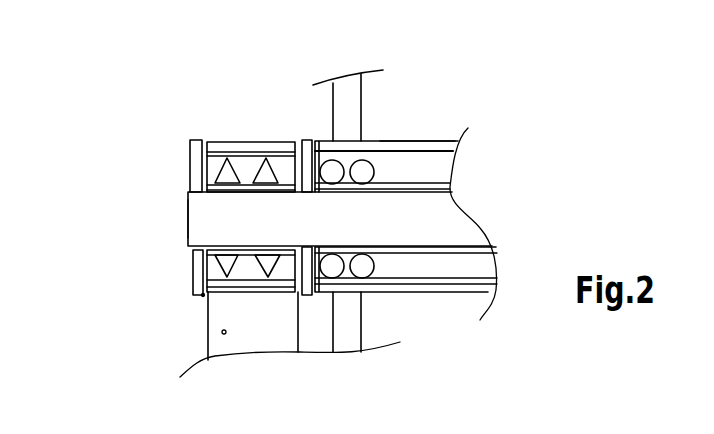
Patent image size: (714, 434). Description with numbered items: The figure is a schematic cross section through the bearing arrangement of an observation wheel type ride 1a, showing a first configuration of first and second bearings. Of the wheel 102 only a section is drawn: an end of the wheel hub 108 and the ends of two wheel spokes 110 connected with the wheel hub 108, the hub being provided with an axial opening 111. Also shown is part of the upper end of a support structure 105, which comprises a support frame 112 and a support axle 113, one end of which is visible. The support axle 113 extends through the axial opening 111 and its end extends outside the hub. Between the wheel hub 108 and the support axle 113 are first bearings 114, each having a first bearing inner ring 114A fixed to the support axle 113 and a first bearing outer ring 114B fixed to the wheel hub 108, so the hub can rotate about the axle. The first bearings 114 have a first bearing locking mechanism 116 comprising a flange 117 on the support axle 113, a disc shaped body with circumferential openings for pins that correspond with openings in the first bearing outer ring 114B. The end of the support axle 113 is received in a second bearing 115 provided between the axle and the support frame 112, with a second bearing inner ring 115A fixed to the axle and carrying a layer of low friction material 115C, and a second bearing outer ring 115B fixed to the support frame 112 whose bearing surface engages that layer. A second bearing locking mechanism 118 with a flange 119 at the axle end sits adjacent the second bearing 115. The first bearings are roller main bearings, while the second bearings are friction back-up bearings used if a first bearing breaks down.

The linear drive assembly 1a is at (537, 85).
The wheel 102 is at (285, 72).
The support structure 105 is at (120, 225).
The wheel hub 108 is at (409, 134).
The wheel spokes 110 is at (367, 111).
The axial opening 111 is at (428, 173).
The support frame 112 is at (222, 333).
The support axle 113 is at (200, 215).
The first bearings 114 is at (310, 130).
The first bearing inner ring 114A is at (447, 187).
The first bearing outer ring 114B is at (435, 153).
The second bearings 115 is at (197, 125).
The second bearing inner ring 115A is at (205, 252).
The second bearing outer ring 115B is at (202, 297).
The layer of low friction material 115C is at (200, 163).
The first bearing locking mechanism 116 is at (290, 135).
The flange 117 is at (308, 300).
The second bearing locking mechanism 118 is at (182, 137).
The flange 119 is at (190, 177).